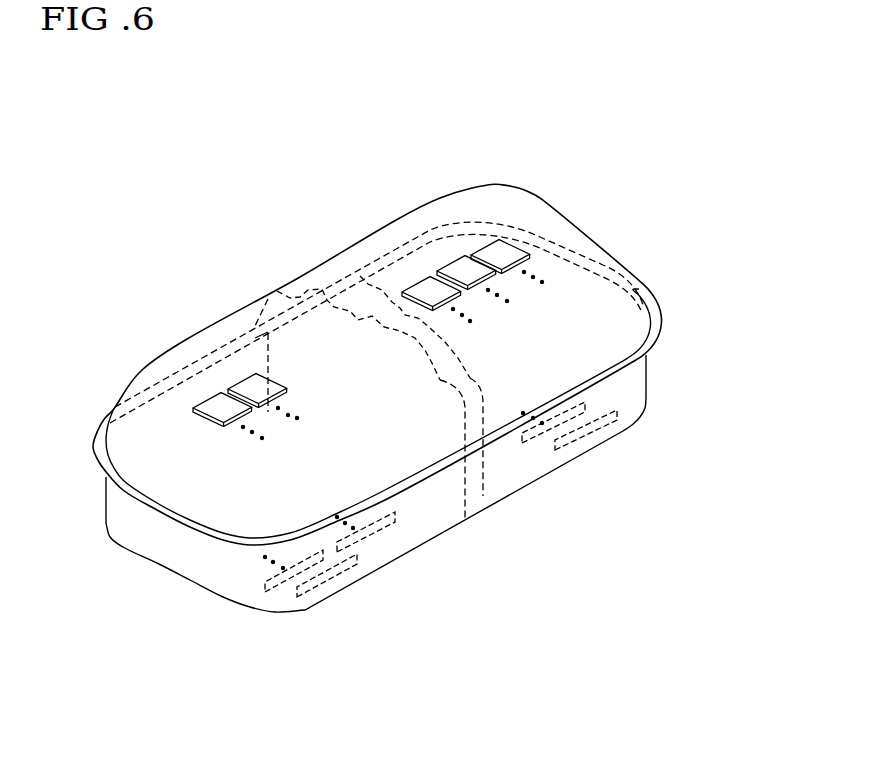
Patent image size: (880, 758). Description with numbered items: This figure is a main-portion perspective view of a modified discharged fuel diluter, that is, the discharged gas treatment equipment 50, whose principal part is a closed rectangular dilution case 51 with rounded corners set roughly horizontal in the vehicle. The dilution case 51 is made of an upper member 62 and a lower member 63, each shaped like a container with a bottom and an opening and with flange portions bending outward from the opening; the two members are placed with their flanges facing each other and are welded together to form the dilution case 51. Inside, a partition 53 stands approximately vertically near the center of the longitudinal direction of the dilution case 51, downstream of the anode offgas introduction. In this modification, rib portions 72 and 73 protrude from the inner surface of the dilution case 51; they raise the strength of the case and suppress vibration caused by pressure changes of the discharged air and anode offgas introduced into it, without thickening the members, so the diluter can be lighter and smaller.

The discharged gas treatment equipment 50 is at (521, 131).
The dilution case 51 is at (265, 302).
The partition 53 is at (476, 484).
The upper member 62 is at (566, 216).
The lower member 63 is at (647, 378).
The rib portion 72 is at (430, 290).
The rib portion 73 is at (592, 447).